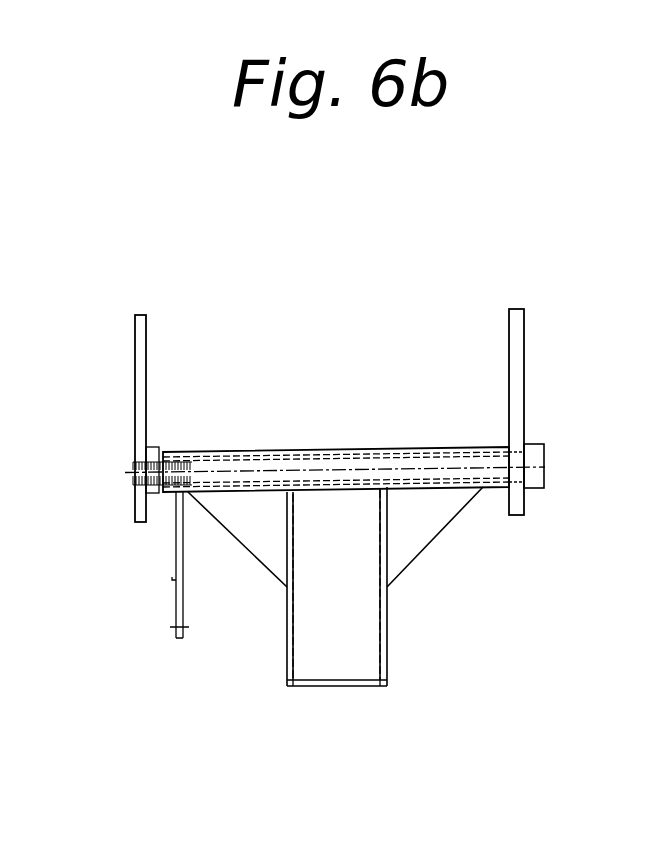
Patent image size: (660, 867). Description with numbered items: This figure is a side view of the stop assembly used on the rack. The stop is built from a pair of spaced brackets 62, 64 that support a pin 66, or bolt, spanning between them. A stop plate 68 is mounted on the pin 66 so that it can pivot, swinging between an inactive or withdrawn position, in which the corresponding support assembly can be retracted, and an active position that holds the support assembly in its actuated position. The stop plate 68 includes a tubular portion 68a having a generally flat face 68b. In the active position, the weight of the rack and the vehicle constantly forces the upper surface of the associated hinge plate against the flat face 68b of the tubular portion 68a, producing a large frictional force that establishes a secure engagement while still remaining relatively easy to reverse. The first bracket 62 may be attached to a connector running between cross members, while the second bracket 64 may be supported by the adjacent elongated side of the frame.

The first bracket 62 is at (147, 354).
The second bracket 64 is at (519, 352).
The pin 66 is at (272, 460).
The stop plate 68 is at (425, 548).
The tubular portion 68a is at (287, 638).
The flat face 68b is at (365, 683).